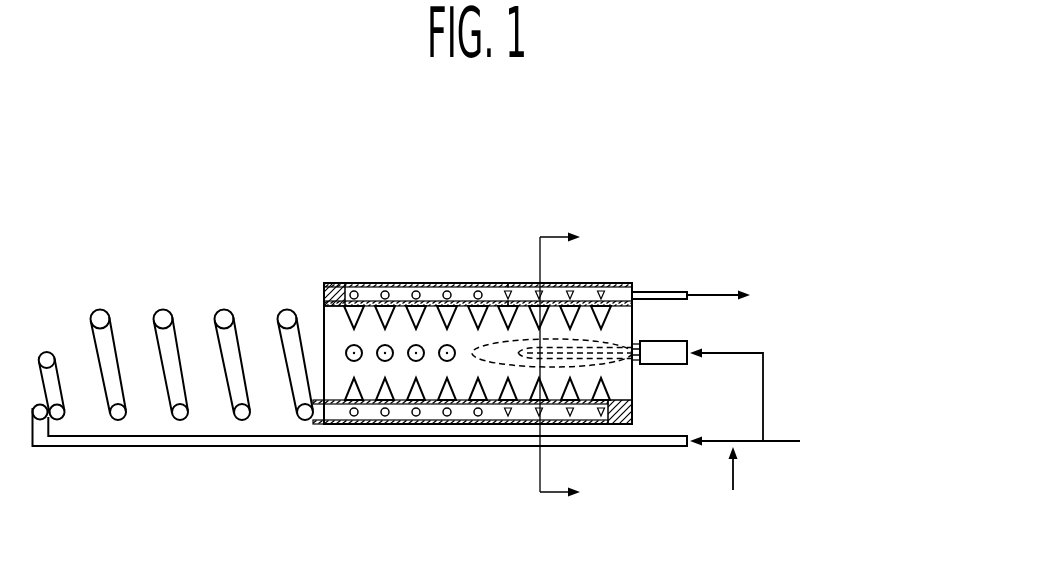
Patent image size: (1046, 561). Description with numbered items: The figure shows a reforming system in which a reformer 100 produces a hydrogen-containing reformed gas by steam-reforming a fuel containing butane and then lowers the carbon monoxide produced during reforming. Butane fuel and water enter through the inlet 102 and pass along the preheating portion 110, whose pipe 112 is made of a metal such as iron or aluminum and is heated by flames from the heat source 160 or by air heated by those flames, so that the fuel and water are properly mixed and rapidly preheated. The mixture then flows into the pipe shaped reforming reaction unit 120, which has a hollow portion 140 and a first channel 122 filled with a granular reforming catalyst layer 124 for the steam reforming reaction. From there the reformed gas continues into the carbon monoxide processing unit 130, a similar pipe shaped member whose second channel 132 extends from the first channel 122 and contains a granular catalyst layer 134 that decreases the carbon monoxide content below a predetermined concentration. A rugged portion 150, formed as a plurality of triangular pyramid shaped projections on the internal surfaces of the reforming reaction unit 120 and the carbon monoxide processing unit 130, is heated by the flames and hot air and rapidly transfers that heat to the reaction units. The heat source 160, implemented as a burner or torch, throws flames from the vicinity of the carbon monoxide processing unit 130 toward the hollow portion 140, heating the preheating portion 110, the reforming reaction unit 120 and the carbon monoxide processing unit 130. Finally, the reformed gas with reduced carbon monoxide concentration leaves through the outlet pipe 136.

The reformer 100 is at (77, 183).
The inlet 102 is at (636, 448).
The preheating portion 110 is at (173, 316).
The pipe 112 is at (224, 310).
The reforming reaction unit 120 is at (514, 325).
The first channel 122 is at (342, 283).
The reforming catalyst layer 124 is at (382, 283).
The carbon monoxide processing unit 130 is at (610, 282).
The second channel 132 is at (602, 283).
The catalyst layer 134 is at (572, 283).
The outlet pipe 136 is at (672, 290).
The hollow portion 140 is at (368, 367).
The rugged portion 150 is at (472, 320).
The heat source 160 is at (668, 341).